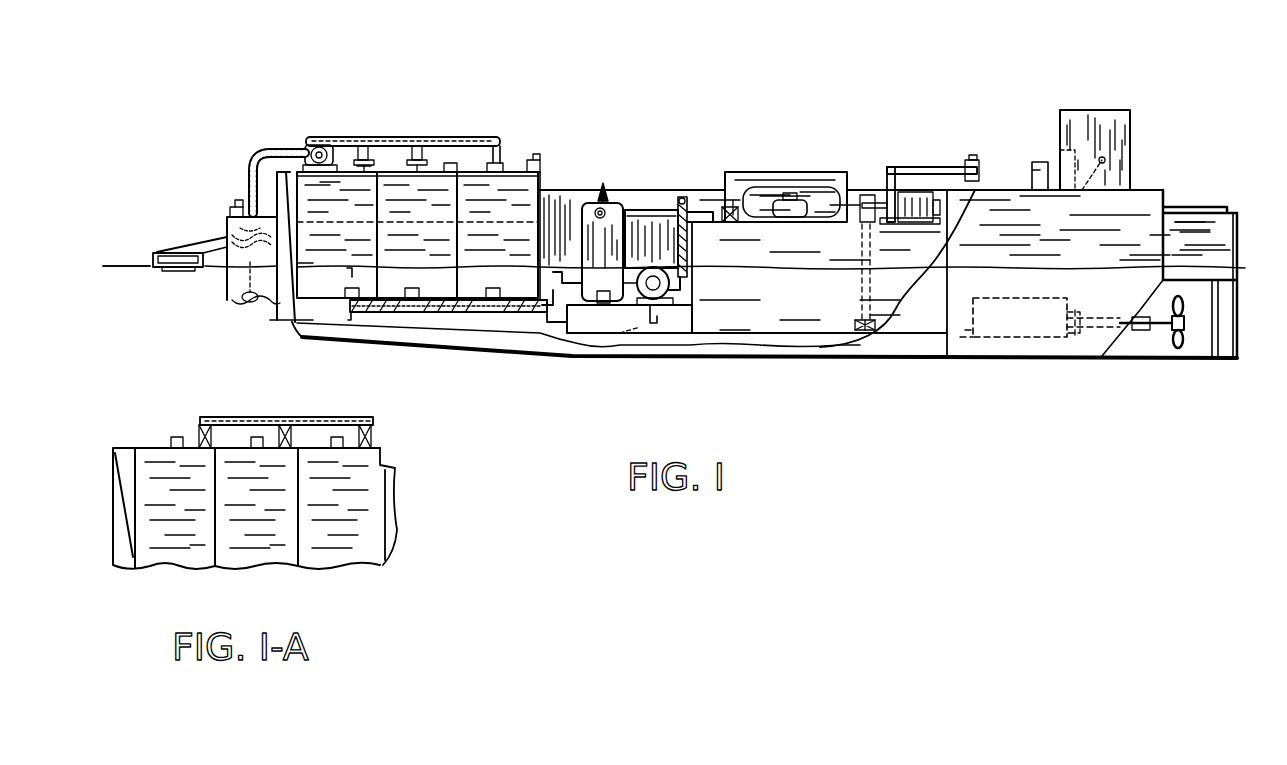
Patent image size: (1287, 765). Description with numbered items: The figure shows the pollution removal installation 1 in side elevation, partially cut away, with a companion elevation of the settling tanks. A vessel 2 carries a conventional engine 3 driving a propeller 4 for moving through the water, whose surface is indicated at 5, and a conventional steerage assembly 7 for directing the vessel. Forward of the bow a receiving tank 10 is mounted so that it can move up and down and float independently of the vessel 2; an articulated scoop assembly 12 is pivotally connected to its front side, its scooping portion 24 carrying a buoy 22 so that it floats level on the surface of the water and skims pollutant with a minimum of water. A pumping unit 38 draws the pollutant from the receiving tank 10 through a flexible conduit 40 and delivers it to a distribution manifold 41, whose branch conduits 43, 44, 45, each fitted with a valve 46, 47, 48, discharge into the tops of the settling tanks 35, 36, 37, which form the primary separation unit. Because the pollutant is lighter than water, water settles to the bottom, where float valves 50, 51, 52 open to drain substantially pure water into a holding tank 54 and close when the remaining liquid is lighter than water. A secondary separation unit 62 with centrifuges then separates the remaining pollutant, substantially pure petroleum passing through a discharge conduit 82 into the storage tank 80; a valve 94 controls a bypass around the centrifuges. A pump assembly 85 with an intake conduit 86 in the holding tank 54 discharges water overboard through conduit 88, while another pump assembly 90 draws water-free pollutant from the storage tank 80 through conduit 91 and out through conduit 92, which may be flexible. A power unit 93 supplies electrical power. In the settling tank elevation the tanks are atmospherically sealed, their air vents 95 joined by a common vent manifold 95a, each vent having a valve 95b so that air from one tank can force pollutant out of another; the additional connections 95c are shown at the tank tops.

In FIG. 1, the installation 1 is at (731, 112).
In FIG. 1, the vessel 2 is at (1160, 190).
In FIG. 1, the engine 3 is at (1030, 318).
In FIG. 1, the propeller 4 is at (1181, 350).
In FIG. 1, the surface of the water 5 is at (328, 268).
In FIG. 1, the steerage assembly 7 is at (1087, 165).
In FIG. 1, the receiving tank 10 is at (232, 309).
In FIG. 1, the articulated scoop assembly 12 is at (154, 248).
In FIG. 1, the buoy 22 is at (181, 271).
In FIG. 1, the scooping portion 24 is at (152, 270).
In FIG. 1, the settling tank 35 is at (415, 338).
In FIG. 1-A, the settling tank 35 is at (167, 555).
In FIG. 1, the settling tank 36 is at (432, 203).
In FIG. 1-A, the settling tank 36 is at (265, 548).
In FIG. 1, the settling tank 37 is at (515, 190).
In FIG. 1-A, the settling tank 37 is at (331, 548).
In FIG. 1, the pumping unit 38 is at (322, 137).
In FIG. 1, the flexible conduit 40 is at (257, 160).
In FIG. 1, the distribution manifold 41 is at (397, 195).
In FIG. 1, the branch conduit 43 is at (354, 198).
In FIG. 1, the branch conduit 44 is at (421, 200).
In FIG. 1, the branch conduit 45 is at (501, 200).
In FIG. 1, the valve 46 is at (377, 150).
In FIG. 1, the valve 47 is at (425, 150).
In FIG. 1, the valve 48 is at (503, 150).
In FIG. 1, the float valve 50 is at (366, 265).
In FIG. 1, the float valve 51 is at (412, 288).
In FIG. 1, the float valve 52 is at (495, 288).
In FIG. 1, the holding tank 54 is at (576, 318).
In FIG. 1, the secondary separation unit 62 is at (605, 186).
In FIG. 1, the storage tank 80 is at (772, 305).
In FIG. 1, the discharge conduit 82 is at (652, 210).
In FIG. 1, the pump assembly 85 is at (662, 299).
In FIG. 1, the conduit 86 is at (622, 343).
In FIG. 1, the conduit 88 is at (692, 244).
In FIG. 1, the pump assembly 90 is at (890, 168).
In FIG. 1, the conduit 91 is at (862, 195).
In FIG. 1, the conduit 92 is at (913, 167).
In FIG. 1, the power unit 93 is at (745, 190).
In FIG. 1, the valve 94 is at (788, 217).
In FIG. 1, the air vent 95 is at (233, 208).
In FIG. 1-A, the air vent 95 is at (383, 452).
In FIG. 1-A, the common vent manifold 95a is at (250, 418).
In FIG. 1-A, the vent valve 95b is at (199, 436).
In FIG. 1-A, the tank inlet 95c is at (176, 452).